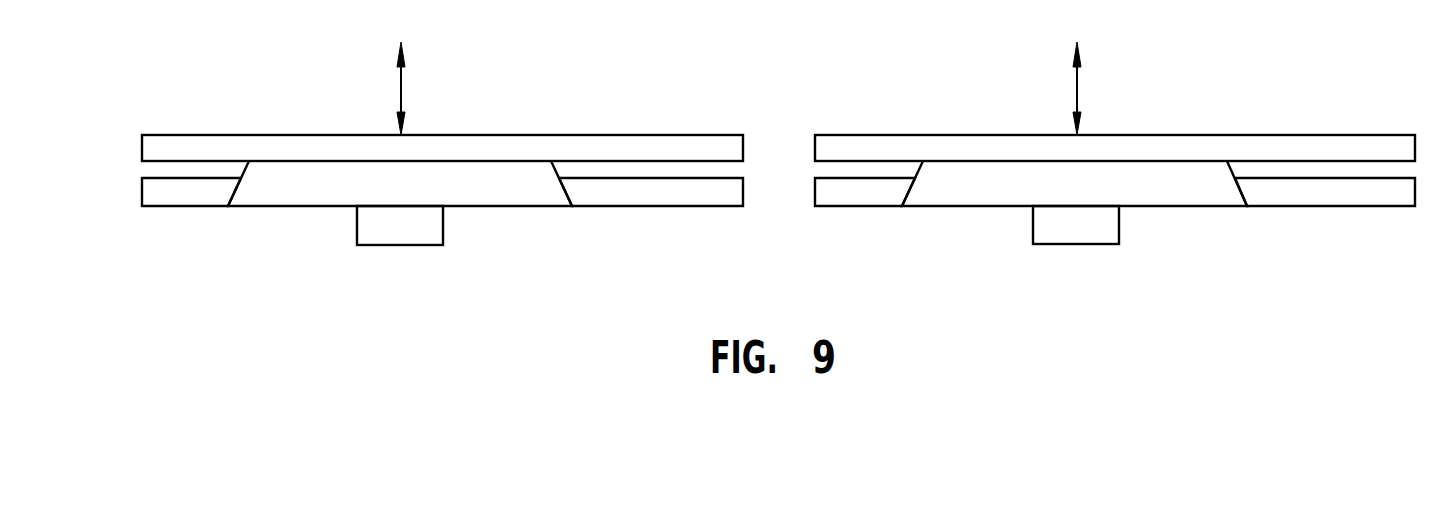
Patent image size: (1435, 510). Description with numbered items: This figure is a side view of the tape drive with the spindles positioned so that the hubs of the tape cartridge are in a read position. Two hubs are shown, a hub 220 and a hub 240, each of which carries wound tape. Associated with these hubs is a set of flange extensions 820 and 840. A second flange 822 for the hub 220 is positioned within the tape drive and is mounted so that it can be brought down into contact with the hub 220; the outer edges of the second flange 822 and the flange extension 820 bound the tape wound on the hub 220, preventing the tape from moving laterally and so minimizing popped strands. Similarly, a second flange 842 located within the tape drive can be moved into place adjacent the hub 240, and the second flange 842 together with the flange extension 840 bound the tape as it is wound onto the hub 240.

The second flange 822 is at (588, 143).
The flange extension 820 is at (185, 196).
The hub 220 is at (300, 196).
The second flange 842 is at (1262, 143).
The flange extension 840 is at (857, 196).
The hub 240 is at (973, 196).